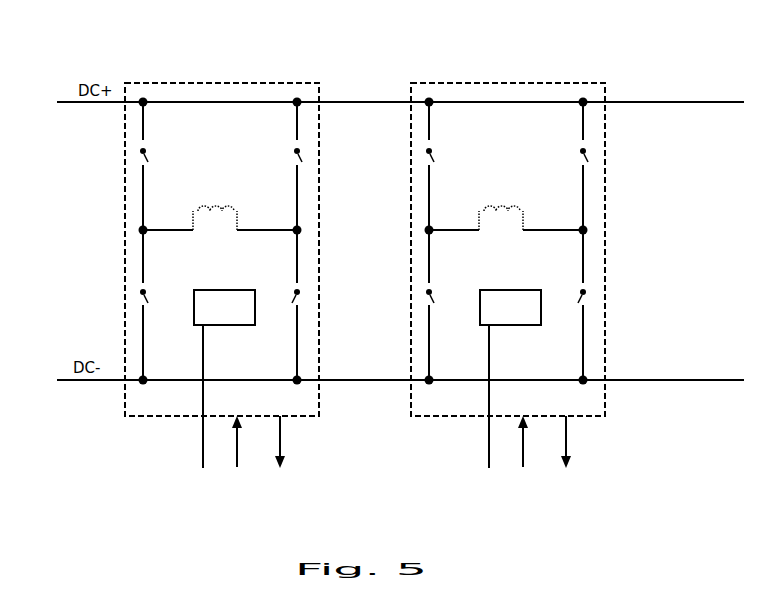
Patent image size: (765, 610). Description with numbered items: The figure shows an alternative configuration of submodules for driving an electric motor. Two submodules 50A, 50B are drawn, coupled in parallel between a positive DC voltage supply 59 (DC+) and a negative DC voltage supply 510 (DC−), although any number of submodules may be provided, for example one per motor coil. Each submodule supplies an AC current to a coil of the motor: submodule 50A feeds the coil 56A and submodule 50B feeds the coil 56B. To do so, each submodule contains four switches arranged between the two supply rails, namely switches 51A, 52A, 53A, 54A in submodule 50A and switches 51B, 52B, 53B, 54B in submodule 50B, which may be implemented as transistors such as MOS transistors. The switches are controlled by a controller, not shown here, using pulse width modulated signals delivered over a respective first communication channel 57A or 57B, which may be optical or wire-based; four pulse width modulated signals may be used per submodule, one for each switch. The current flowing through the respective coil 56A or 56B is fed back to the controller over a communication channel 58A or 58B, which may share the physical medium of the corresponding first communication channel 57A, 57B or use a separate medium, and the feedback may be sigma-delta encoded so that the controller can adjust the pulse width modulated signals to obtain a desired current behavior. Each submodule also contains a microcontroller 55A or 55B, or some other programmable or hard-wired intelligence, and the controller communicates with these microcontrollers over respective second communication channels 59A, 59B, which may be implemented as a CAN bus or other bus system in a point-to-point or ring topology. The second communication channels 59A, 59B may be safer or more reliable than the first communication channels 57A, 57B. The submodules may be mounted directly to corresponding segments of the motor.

The DC voltage supply 59 is at (65, 99).
The DC voltage supply 510 is at (71, 384).
The submodule 50A is at (213, 81).
The submodule 50B is at (499, 81).
The switch 51A is at (146, 150).
The switch 51B is at (432, 150).
The switch 52A is at (293, 152).
The switch 52B is at (579, 152).
The switch 53A is at (146, 290).
The switch 53B is at (432, 290).
The switch 54A is at (295, 295).
The switch 54B is at (581, 295).
The microcontroller 55A is at (220, 288).
The microcontroller 55B is at (506, 288).
The coil 56A is at (200, 209).
The coil 56B is at (486, 209).
The first communication channel 57A is at (239, 456).
The first communication channel 57B is at (525, 456).
The communication channel 58A is at (283, 448).
The communication channel 58B is at (569, 448).
The second communication channel 59A is at (200, 453).
The second communication channel 59B is at (486, 453).